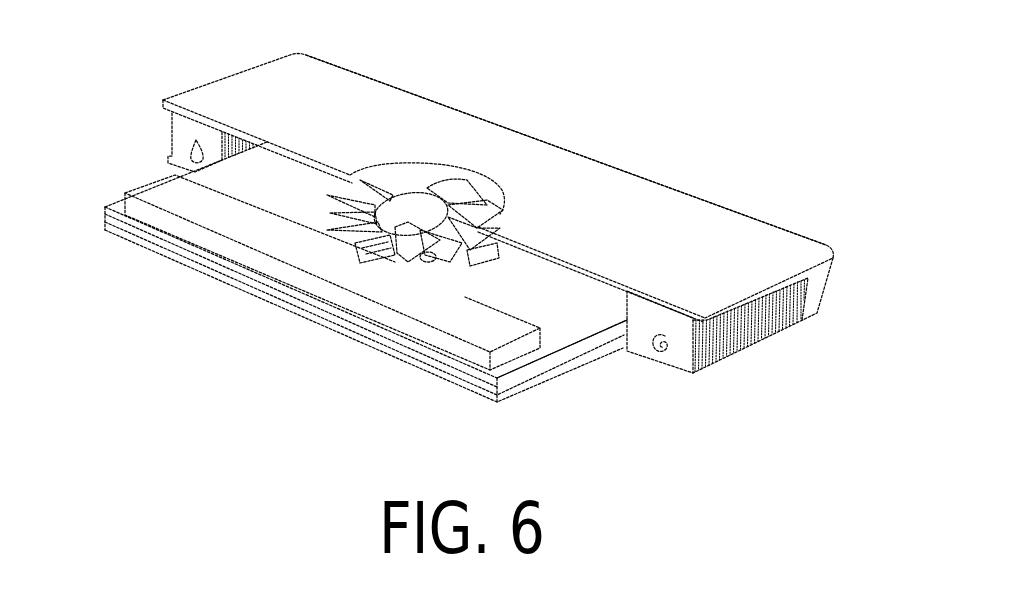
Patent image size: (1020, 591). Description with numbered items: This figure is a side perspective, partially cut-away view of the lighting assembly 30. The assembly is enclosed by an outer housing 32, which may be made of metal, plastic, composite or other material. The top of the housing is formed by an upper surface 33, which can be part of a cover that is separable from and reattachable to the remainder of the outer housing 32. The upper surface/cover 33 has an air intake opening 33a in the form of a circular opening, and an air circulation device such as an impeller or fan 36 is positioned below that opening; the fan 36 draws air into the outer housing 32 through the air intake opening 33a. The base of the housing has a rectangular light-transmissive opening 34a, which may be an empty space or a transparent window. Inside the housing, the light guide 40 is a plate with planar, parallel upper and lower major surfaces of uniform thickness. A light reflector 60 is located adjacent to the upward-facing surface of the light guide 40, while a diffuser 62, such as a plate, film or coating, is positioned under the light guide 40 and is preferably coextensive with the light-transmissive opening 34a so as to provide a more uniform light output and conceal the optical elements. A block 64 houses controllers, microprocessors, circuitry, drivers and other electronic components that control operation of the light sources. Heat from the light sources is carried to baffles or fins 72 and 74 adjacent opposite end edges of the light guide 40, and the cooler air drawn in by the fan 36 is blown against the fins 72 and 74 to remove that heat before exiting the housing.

The lighting assembly 30 is at (746, 76).
The outer housing 32 is at (222, 79).
The upper surface 33 is at (317, 109).
The air intake opening 33a is at (506, 195).
The light-transmissive opening 34a is at (768, 334).
The fan 36 is at (408, 206).
The light guide 40 is at (233, 273).
The light reflector 60 is at (567, 328).
The diffuser 62 is at (373, 346).
The block 64 is at (157, 190).
The fin 72 is at (183, 131).
The fin 74 is at (684, 348).